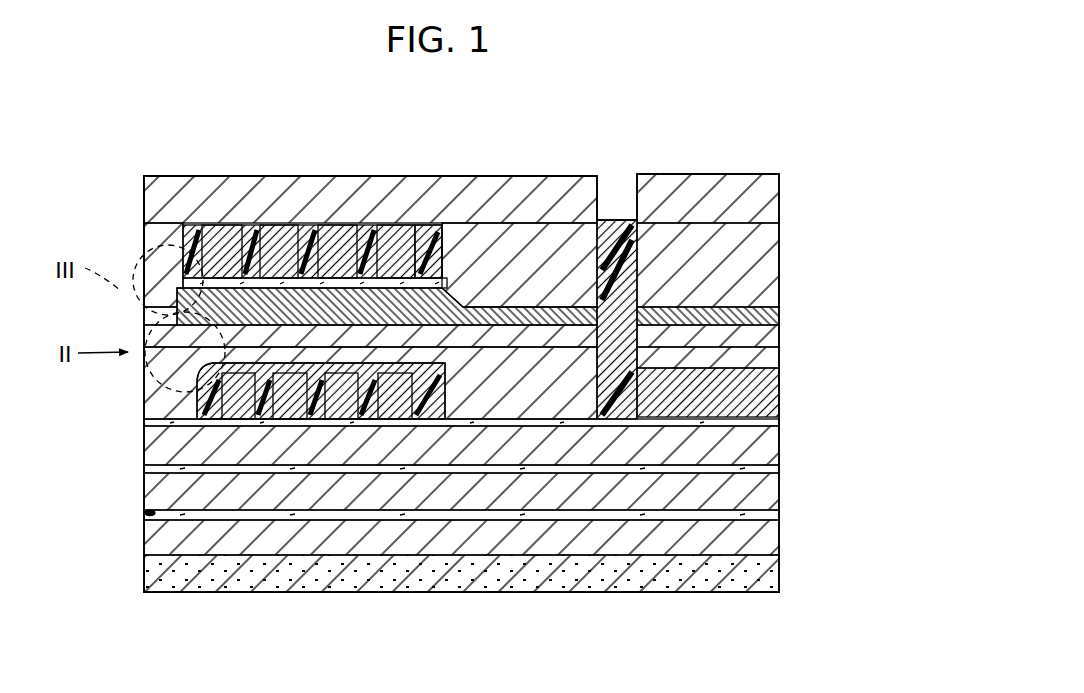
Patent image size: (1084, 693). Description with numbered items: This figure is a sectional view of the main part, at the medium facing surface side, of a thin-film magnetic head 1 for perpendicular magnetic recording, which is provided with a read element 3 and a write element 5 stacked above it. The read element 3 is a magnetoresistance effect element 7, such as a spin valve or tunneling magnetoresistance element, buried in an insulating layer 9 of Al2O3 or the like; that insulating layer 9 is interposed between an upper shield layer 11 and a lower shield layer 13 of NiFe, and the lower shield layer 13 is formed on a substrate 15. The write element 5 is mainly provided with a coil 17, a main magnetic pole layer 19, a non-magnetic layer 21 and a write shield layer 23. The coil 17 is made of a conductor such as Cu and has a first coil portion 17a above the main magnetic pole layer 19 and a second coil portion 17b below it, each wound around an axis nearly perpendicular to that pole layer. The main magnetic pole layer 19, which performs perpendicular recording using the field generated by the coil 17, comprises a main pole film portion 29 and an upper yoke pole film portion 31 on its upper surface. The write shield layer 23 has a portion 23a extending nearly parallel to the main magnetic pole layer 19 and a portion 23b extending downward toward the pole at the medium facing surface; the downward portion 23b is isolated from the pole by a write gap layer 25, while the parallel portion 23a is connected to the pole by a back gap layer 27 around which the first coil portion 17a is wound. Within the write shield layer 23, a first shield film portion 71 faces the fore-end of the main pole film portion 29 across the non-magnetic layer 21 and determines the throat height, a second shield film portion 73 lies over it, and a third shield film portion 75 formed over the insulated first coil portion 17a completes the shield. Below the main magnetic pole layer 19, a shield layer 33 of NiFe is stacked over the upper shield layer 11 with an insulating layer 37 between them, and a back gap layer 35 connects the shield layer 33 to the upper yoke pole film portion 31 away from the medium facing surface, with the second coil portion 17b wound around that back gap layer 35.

The thin-film magnetic head 1 is at (283, 106).
The read element 3 is at (128, 532).
The write element 5 is at (128, 372).
The magnetoresistance effect element 7 is at (145, 513).
The insulating layer 9 is at (430, 514).
The upper shield layer 11 is at (498, 492).
The lower shield layer 13 is at (548, 397).
The substrate 15 is at (193, 574).
The coil 17 is at (343, 243).
The first coil portion 17a is at (440, 227).
The second coil portion 17b is at (240, 421).
The main magnetic pole layer 19 is at (288, 284).
The non-magnetic layer 21 is at (167, 270).
The write shield layer 23 is at (172, 174).
The portion extending nearly in parallel 23a is at (220, 200).
The portion extending downward 23b is at (143, 243).
The write gap layer 25 is at (148, 316).
The back gap layer 27 is at (518, 240).
The main pole film portion 29 is at (205, 340).
The upper yoke pole film portion 31 is at (385, 222).
The shield layer 33 is at (372, 443).
The back gap layer 35 is at (617, 420).
The insulating layer 37 is at (680, 463).
The first shield film portion 71 is at (165, 300).
The second shield film portion 73 is at (144, 198).
The third shield film portion 75 is at (270, 205).